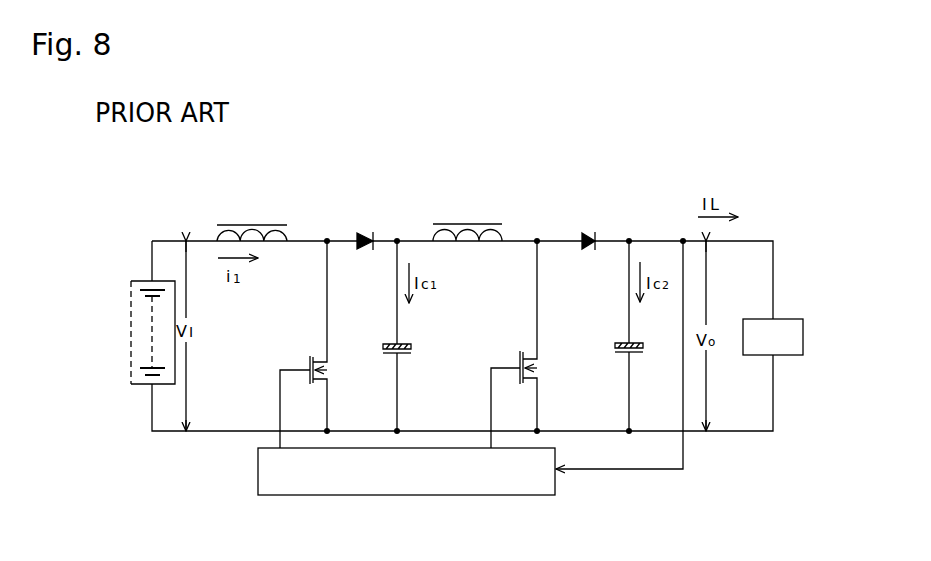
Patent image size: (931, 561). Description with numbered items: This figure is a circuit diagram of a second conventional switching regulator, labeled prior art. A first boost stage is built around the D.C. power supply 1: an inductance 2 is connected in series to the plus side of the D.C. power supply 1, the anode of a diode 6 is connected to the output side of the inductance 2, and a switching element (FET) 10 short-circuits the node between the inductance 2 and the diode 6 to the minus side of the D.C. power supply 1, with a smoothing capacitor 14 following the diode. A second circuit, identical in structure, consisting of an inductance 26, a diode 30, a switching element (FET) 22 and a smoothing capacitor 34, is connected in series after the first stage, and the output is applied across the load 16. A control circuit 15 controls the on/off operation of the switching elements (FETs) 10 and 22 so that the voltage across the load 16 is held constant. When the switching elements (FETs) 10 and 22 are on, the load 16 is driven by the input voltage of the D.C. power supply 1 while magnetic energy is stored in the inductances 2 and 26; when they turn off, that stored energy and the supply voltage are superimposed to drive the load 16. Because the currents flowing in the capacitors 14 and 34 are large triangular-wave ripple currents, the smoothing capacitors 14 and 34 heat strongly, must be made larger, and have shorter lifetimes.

The D.C. power supply 1 is at (131, 362).
The inductance 2 is at (252, 225).
The diode 6 is at (359, 236).
The switching element (FET) 10 is at (310, 360).
The smoothing capacitor 14 is at (388, 356).
The control circuit 15 is at (557, 481).
The load 16 is at (797, 318).
The switching element (FET) 22 is at (520, 358).
The inductance 26 is at (453, 223).
The diode 30 is at (583, 235).
The smoothing capacitor 34 is at (622, 354).